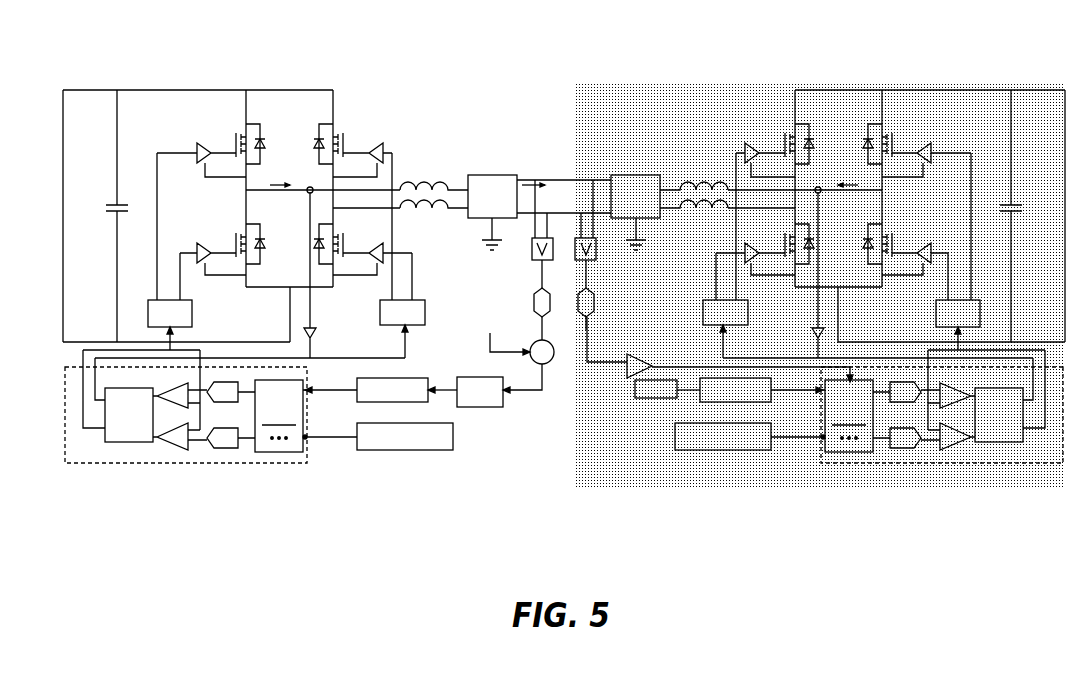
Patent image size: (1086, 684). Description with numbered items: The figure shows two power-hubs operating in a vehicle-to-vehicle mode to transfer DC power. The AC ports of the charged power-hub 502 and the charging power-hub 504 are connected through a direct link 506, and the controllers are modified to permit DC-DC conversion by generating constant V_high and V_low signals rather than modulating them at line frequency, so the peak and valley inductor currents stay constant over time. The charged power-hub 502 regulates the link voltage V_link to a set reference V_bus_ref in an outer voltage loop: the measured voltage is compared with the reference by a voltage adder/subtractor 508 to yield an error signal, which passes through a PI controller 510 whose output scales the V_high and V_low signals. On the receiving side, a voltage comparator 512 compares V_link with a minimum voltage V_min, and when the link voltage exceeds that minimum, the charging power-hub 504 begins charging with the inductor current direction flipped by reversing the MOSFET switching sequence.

The charged power-hub 502 is at (192, 64).
The charging power-hub 504 is at (820, 261).
The direct link 506 is at (558, 180).
The voltage adder/subtractor 508 is at (553, 358).
The PI controller 510 is at (503, 403).
The voltage comparator 512 is at (637, 353).